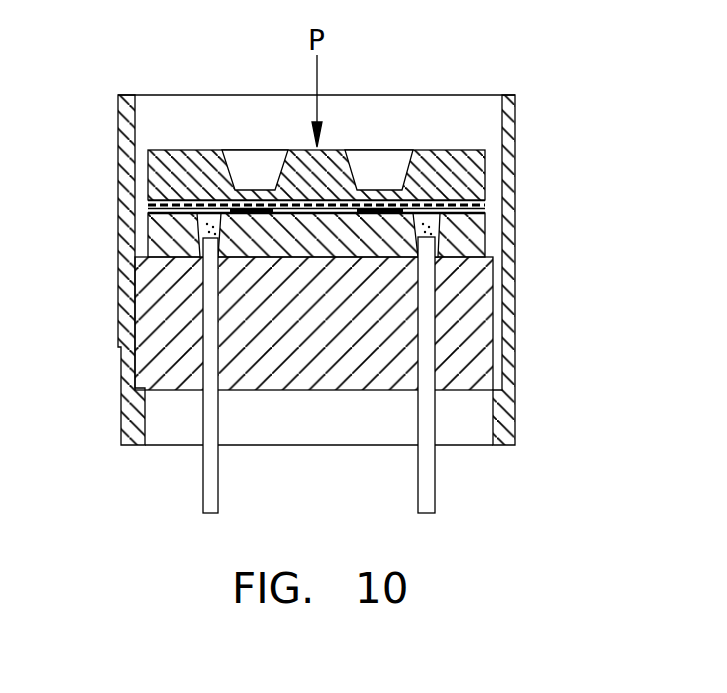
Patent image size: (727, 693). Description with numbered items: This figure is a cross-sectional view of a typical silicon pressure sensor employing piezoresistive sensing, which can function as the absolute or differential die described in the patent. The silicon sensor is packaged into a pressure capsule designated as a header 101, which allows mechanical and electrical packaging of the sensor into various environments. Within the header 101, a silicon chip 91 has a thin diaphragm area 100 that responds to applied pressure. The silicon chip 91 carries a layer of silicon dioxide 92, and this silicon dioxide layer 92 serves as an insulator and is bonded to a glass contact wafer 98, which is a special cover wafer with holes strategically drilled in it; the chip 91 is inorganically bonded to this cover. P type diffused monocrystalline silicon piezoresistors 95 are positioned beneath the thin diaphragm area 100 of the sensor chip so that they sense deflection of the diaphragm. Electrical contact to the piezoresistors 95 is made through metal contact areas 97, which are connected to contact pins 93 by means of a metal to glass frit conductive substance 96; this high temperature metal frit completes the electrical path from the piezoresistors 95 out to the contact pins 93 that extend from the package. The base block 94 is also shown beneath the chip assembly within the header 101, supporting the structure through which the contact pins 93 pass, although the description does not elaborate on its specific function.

The silicon chip 91 is at (225, 185).
The silicon dioxide layer 92 is at (473, 205).
The contact pins 93 is at (437, 458).
The base block 94 is at (173, 392).
The P type diffused monocrystalline silicon piezoresistors 95 is at (287, 222).
The metal to glass frit conductive substance 96 is at (220, 258).
The metal contact areas 97 is at (196, 222).
The glass contact wafer 98 is at (488, 216).
The diaphragm area 100 is at (378, 160).
The header 101 is at (513, 417).